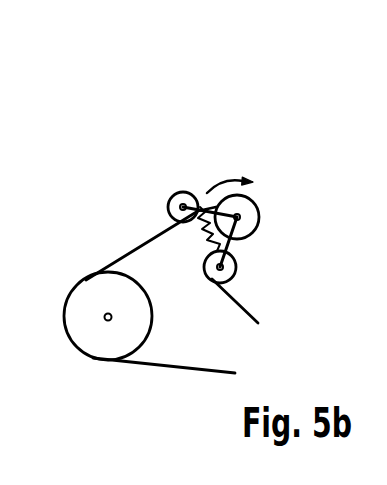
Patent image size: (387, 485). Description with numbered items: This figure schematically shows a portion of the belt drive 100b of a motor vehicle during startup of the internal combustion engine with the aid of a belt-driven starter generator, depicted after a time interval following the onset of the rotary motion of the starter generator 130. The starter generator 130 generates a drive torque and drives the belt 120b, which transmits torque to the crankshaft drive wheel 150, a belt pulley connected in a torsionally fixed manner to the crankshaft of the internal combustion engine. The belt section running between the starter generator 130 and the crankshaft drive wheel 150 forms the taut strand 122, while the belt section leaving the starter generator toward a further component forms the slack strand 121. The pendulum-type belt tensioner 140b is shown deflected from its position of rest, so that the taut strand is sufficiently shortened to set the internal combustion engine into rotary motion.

The belt drive 100b is at (120, 112).
The belt 120b is at (173, 369).
The slack strand 121 is at (245, 309).
The taut strand 122 is at (138, 247).
The starter generator 130 is at (288, 185).
The pendulum-type belt tensioner 140b is at (262, 251).
The crankshaft drive wheel 150 is at (98, 343).